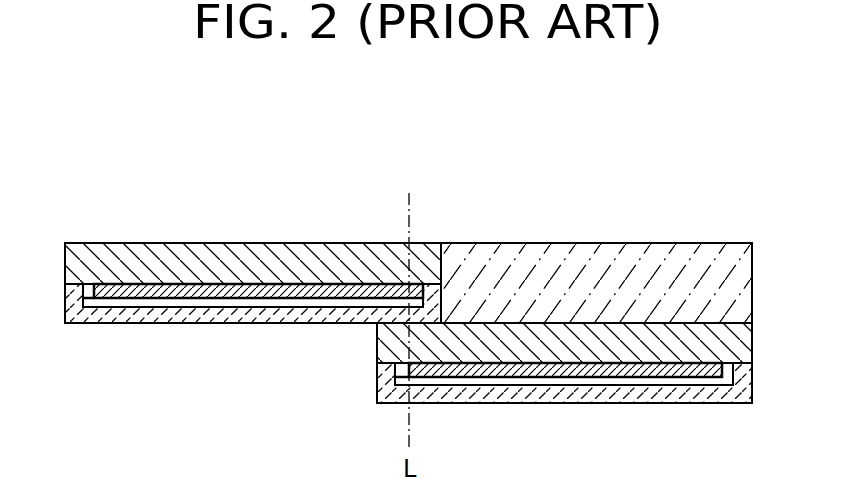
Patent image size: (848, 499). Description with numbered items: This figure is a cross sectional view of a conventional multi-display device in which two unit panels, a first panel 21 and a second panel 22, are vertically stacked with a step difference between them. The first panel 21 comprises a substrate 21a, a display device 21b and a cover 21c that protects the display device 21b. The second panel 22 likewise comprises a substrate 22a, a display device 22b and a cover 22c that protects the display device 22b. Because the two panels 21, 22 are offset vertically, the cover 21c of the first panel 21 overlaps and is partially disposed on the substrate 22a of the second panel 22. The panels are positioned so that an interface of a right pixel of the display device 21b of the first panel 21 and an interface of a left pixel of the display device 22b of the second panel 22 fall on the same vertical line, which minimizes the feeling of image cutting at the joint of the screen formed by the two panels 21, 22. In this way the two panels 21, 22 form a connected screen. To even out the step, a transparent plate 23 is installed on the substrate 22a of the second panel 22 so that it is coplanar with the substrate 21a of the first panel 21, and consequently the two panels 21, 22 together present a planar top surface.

The first panel 21 is at (234, 299).
The substrate of the first panel 21a is at (128, 252).
The display device of the first panel 21b is at (193, 288).
The cover 21c is at (257, 310).
The second panel 22 is at (608, 398).
The substrate of the second panel 22a is at (747, 337).
The display device of the second panel 22b is at (722, 375).
The cover 22c is at (757, 397).
The transparent plate 23 is at (752, 287).